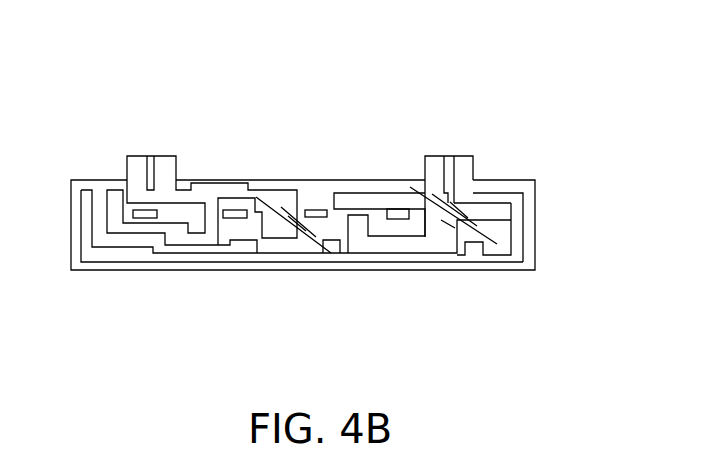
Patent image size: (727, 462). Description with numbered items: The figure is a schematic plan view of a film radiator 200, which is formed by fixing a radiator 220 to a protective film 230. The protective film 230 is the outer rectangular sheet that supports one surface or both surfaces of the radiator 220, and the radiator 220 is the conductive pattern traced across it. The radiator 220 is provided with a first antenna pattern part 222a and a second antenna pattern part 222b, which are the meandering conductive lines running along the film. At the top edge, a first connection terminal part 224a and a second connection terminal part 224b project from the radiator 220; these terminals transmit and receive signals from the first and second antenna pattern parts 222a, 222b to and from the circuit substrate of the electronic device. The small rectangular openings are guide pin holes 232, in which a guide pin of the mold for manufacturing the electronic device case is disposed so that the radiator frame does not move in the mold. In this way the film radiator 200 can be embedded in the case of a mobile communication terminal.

The film radiator 200 is at (565, 26).
The radiator 220 is at (507, 193).
The first antenna pattern part 222a is at (245, 248).
The second antenna pattern part 222b is at (222, 188).
The first connection terminal part 224a is at (463, 165).
The second connection terminal part 224b is at (141, 162).
The protective film 230 is at (535, 224).
The guide pin hole 232 is at (143, 217).